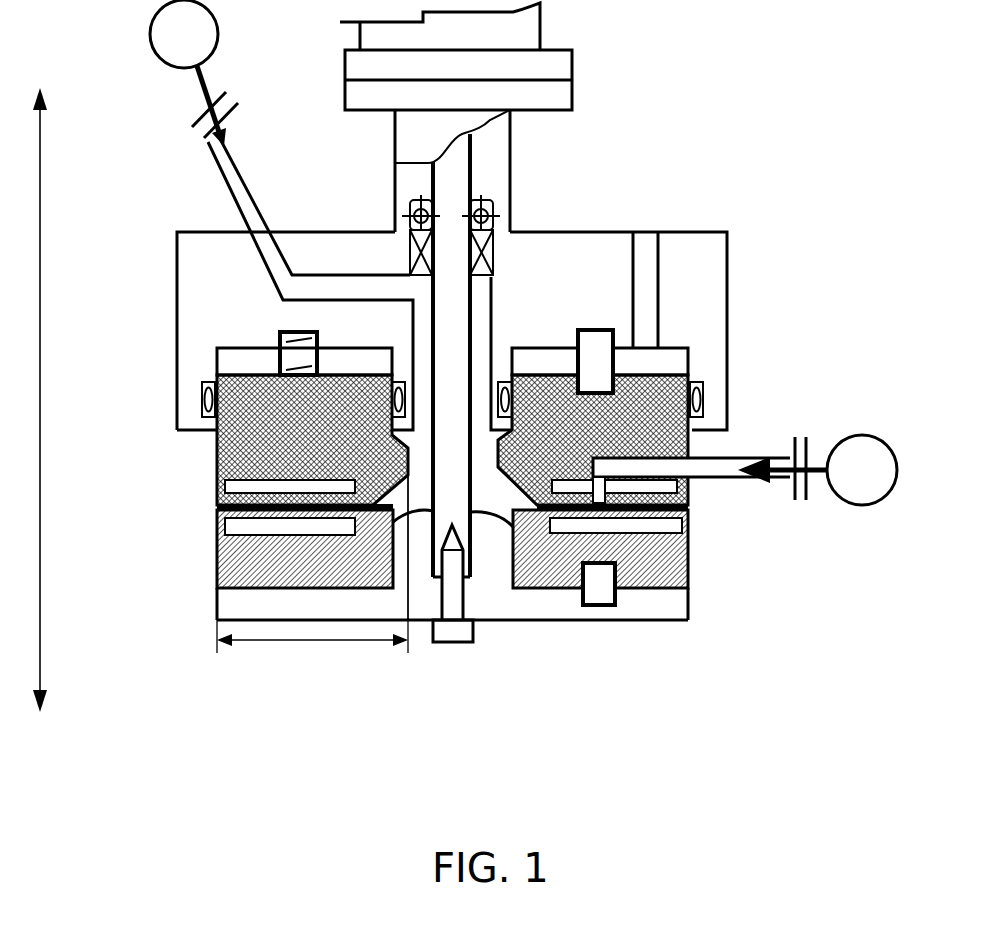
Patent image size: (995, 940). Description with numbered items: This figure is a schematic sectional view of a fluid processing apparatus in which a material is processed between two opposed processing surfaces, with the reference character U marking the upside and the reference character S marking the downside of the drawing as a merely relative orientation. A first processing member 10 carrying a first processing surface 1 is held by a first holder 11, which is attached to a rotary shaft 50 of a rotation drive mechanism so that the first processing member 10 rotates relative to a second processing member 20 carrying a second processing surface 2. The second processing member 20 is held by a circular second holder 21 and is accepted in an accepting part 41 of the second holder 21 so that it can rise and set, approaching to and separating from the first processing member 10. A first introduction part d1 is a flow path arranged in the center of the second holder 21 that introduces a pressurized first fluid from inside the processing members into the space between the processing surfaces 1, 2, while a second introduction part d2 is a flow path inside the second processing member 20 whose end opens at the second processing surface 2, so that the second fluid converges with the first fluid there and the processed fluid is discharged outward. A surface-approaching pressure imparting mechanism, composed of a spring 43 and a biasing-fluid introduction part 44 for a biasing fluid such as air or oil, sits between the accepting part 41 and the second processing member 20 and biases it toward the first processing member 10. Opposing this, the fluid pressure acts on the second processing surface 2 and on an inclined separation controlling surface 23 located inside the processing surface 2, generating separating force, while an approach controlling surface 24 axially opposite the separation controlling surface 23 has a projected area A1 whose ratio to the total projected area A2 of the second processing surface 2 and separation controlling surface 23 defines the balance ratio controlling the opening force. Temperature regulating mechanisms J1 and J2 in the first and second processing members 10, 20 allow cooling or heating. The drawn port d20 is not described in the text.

The first processing surface 1 is at (330, 522).
The second processing surface 2 is at (215, 480).
The first processing member 10 is at (690, 572).
The first holder 11 is at (645, 600).
The second processing member 20 is at (195, 378).
The second holder 21 is at (700, 290).
The separation controlling surface 23 is at (500, 480).
The approach controlling surface 24 is at (492, 290).
The accepting part 41 is at (367, 360).
The spring 43 is at (255, 362).
The biasing-fluid introduction part 44 is at (645, 270).
The rotary shaft 50 is at (455, 440).
The projected area of the approach controlling surface A1 is at (422, 470).
The total projected area of the second processing surface and separation controlling A2 is at (305, 645).
The first introduction part d1 is at (235, 200).
The second introduction part d2 is at (695, 467).
The discharge port d20 is at (655, 370).
The temperature regulating mechanism J1 is at (357, 525).
The temperature regulating mechanism J2 is at (215, 450).
The upside U is at (43, 381).
The downside S is at (24, 738).